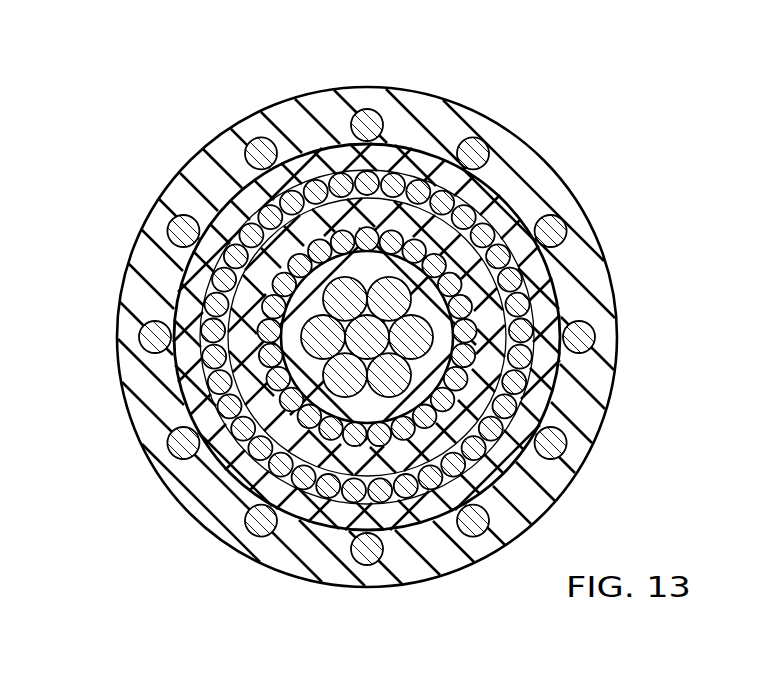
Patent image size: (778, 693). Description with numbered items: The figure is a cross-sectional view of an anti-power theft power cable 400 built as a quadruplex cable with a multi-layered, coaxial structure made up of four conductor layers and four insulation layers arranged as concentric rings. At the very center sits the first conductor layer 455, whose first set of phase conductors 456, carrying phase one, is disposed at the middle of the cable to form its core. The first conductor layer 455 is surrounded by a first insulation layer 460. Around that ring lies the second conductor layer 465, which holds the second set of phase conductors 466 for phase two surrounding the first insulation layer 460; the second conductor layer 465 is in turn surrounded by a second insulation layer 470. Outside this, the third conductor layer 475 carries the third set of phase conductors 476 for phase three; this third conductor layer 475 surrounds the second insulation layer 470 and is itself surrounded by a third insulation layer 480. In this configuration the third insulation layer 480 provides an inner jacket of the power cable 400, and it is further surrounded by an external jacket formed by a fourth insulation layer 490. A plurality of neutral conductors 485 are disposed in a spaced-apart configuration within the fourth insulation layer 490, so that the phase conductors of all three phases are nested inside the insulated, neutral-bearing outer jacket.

The power cable 400 is at (199, 96).
The first conductor layer 455 is at (359, 342).
The first set of phase conductors 456 is at (253, 208).
The first insulation layer 460 is at (358, 408).
The second conductor layer 465 is at (249, 366).
The second set of phase conductors 466 is at (430, 200).
The second insulation layer 470 is at (515, 318).
The third conductor layer 475 is at (496, 218).
The third set of phase conductors 476 is at (538, 368).
The third insulation layer 480 is at (243, 466).
The neutral conductors 485 is at (477, 535).
The fourth insulation layer 490 is at (424, 105).